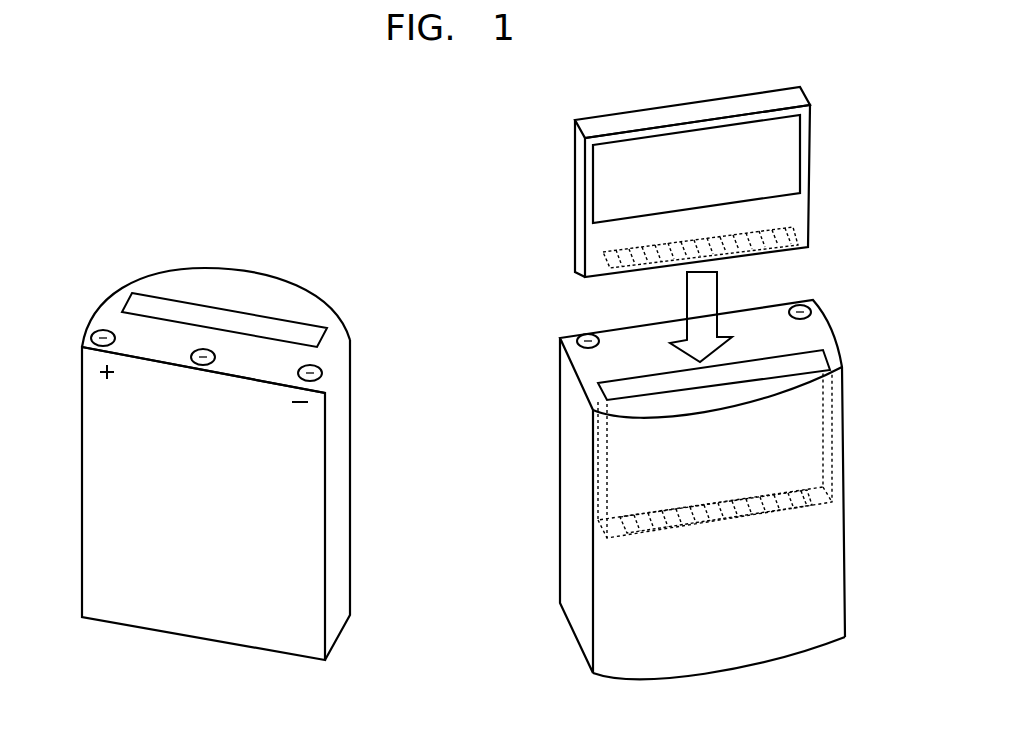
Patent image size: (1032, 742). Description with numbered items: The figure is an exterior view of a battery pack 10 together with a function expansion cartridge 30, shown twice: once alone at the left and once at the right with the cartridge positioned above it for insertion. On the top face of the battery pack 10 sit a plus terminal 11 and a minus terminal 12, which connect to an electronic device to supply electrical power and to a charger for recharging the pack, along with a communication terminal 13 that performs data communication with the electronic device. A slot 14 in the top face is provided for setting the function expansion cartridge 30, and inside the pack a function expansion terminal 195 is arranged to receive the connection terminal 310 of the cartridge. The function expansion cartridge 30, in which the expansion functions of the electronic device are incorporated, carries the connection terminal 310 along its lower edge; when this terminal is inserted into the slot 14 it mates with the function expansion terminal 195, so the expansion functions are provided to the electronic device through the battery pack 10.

The battery pack 10 is at (518, 507).
The plus terminal 11 is at (92, 340).
The minus terminal 12 is at (296, 380).
The communication terminal 13 is at (196, 358).
The slot 14 is at (300, 333).
The function expansion cartridge 30 is at (822, 136).
The connection terminal 310 is at (794, 229).
The function expansion terminal 195 is at (814, 498).